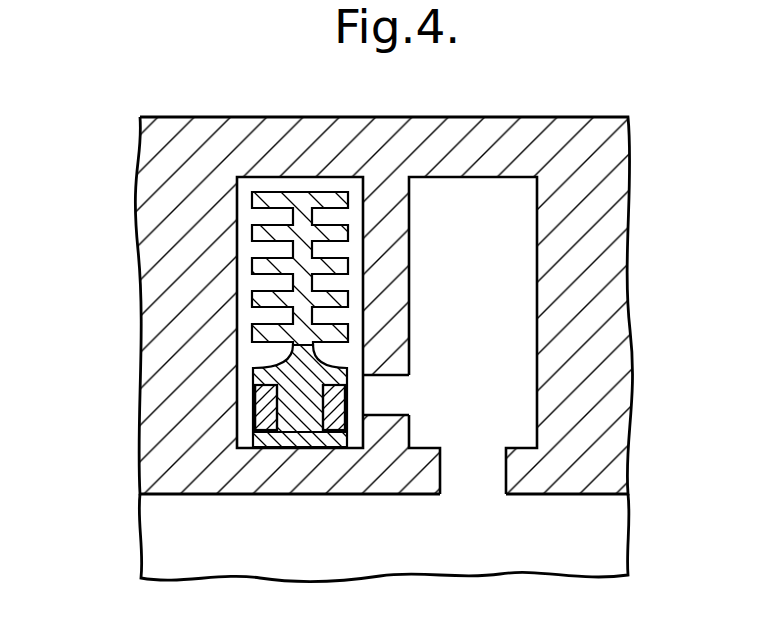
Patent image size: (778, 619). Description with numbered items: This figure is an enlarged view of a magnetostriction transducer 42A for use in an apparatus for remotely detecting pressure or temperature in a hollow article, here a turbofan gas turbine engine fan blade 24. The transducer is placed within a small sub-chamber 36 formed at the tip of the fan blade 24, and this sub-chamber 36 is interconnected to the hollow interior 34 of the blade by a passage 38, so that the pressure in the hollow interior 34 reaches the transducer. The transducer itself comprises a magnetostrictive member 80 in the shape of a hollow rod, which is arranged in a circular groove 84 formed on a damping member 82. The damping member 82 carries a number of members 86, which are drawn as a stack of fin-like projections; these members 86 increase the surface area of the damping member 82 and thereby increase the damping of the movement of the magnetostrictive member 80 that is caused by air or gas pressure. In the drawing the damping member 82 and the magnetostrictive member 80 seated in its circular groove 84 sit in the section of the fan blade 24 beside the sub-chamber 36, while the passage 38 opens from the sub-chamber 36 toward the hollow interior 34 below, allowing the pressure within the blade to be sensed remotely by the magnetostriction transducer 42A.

The fan blade 24 is at (607, 265).
The sub-chamber 36 is at (492, 396).
The passage 38 is at (477, 476).
The hollow interior 34 is at (610, 535).
The members 86 is at (327, 200).
The damping member 82 is at (276, 363).
The magnetostrictive member 80 is at (254, 396).
The circular groove 84 is at (338, 446).
The magnetostriction transducer 42A is at (247, 412).